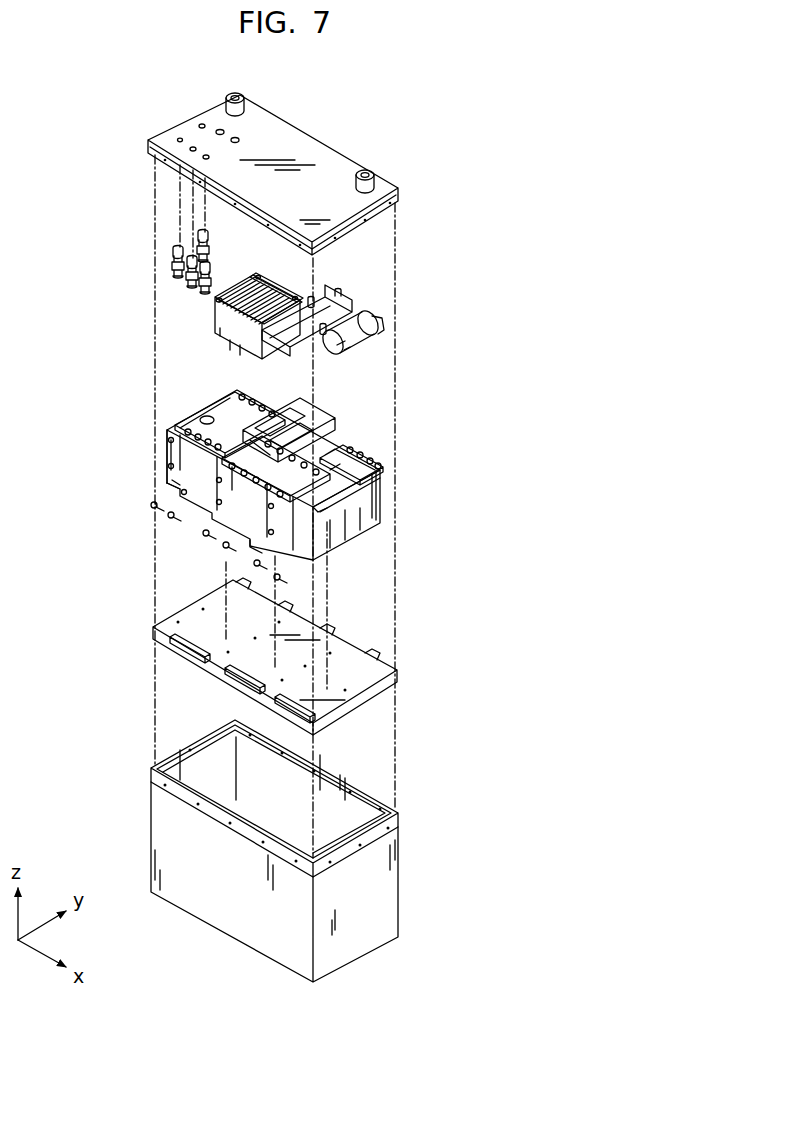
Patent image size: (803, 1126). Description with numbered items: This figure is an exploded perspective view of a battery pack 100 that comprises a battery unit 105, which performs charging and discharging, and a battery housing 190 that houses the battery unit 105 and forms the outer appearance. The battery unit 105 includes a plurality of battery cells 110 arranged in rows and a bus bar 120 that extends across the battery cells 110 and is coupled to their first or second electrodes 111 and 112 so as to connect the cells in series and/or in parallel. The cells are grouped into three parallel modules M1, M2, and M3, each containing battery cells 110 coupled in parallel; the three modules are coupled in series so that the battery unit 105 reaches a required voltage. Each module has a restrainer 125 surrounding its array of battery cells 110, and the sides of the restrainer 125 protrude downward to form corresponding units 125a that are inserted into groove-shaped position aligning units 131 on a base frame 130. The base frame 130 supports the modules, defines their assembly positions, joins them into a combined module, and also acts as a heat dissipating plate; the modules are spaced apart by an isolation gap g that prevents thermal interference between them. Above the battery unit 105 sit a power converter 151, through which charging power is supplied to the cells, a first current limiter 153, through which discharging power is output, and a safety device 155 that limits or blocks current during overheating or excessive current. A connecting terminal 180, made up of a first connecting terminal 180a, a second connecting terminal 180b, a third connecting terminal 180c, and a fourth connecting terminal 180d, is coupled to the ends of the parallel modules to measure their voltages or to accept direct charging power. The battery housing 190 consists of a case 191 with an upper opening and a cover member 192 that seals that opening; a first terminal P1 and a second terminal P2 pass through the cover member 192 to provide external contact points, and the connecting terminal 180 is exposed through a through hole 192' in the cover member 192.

The battery pack 100 is at (470, 158).
The cover member 192 is at (305, 175).
The through hole 192' is at (161, 119).
The first terminal P1 is at (367, 170).
The second terminal P2 is at (235, 93).
The connecting terminal 180 is at (128, 257).
The first connecting terminal 180a is at (200, 287).
The second connecting terminal 180b is at (186, 277).
The third connecting terminal 180c is at (172, 262).
The fourth connecting terminal 180d is at (196, 238).
The power converter 151 is at (236, 280).
The first current limiter 153 is at (310, 310).
The safety device 155 is at (363, 347).
The battery cell 110 is at (350, 492).
The first electrode 111 is at (360, 480).
The second electrode 112 is at (328, 507).
The bus bar 120 is at (372, 455).
The restrainer 125 is at (378, 497).
The corresponding unit 125a is at (175, 488).
The battery unit 105 is at (156, 459).
The first parallel module M1 is at (170, 505).
The second parallel module M2 is at (226, 532).
The third parallel module M3 is at (344, 556).
The isolation gap g is at (258, 545).
The base frame 130 is at (398, 680).
The position aligning unit 131 is at (372, 653).
The battery housing 190 is at (124, 812).
The case 191 is at (388, 893).